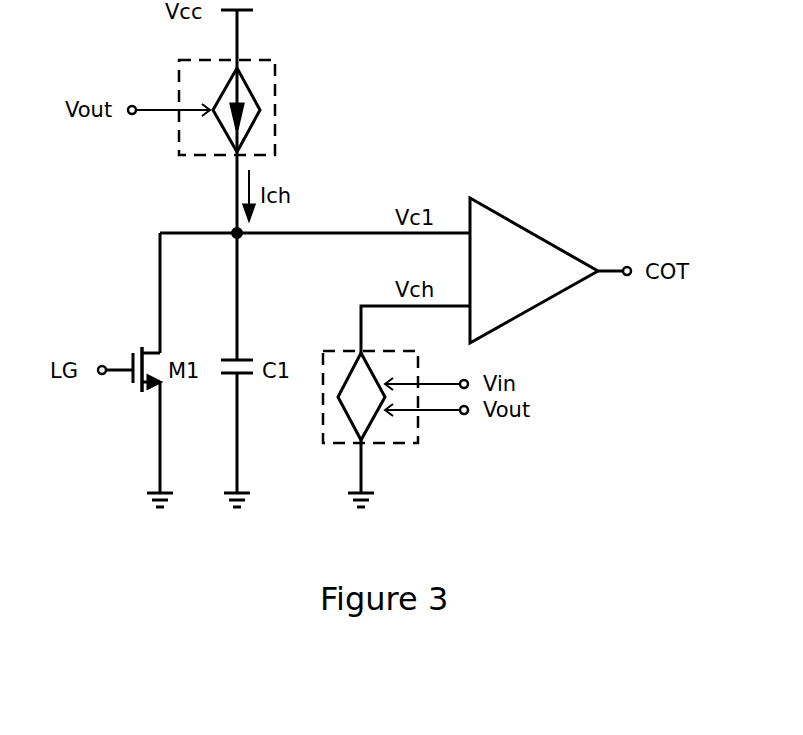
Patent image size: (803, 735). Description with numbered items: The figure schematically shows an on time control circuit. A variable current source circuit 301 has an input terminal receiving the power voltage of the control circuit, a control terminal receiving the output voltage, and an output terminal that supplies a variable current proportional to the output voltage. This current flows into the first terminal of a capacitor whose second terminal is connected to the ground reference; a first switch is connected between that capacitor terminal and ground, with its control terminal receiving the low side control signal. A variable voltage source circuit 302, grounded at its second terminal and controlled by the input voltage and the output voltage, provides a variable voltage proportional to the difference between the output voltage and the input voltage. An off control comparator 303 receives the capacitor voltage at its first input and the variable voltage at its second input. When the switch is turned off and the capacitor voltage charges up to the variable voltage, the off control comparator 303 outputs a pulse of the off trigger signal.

The variable current source circuit 301 is at (276, 108).
The variable voltage source circuit 302 is at (334, 445).
The off control comparator 303 is at (550, 270).